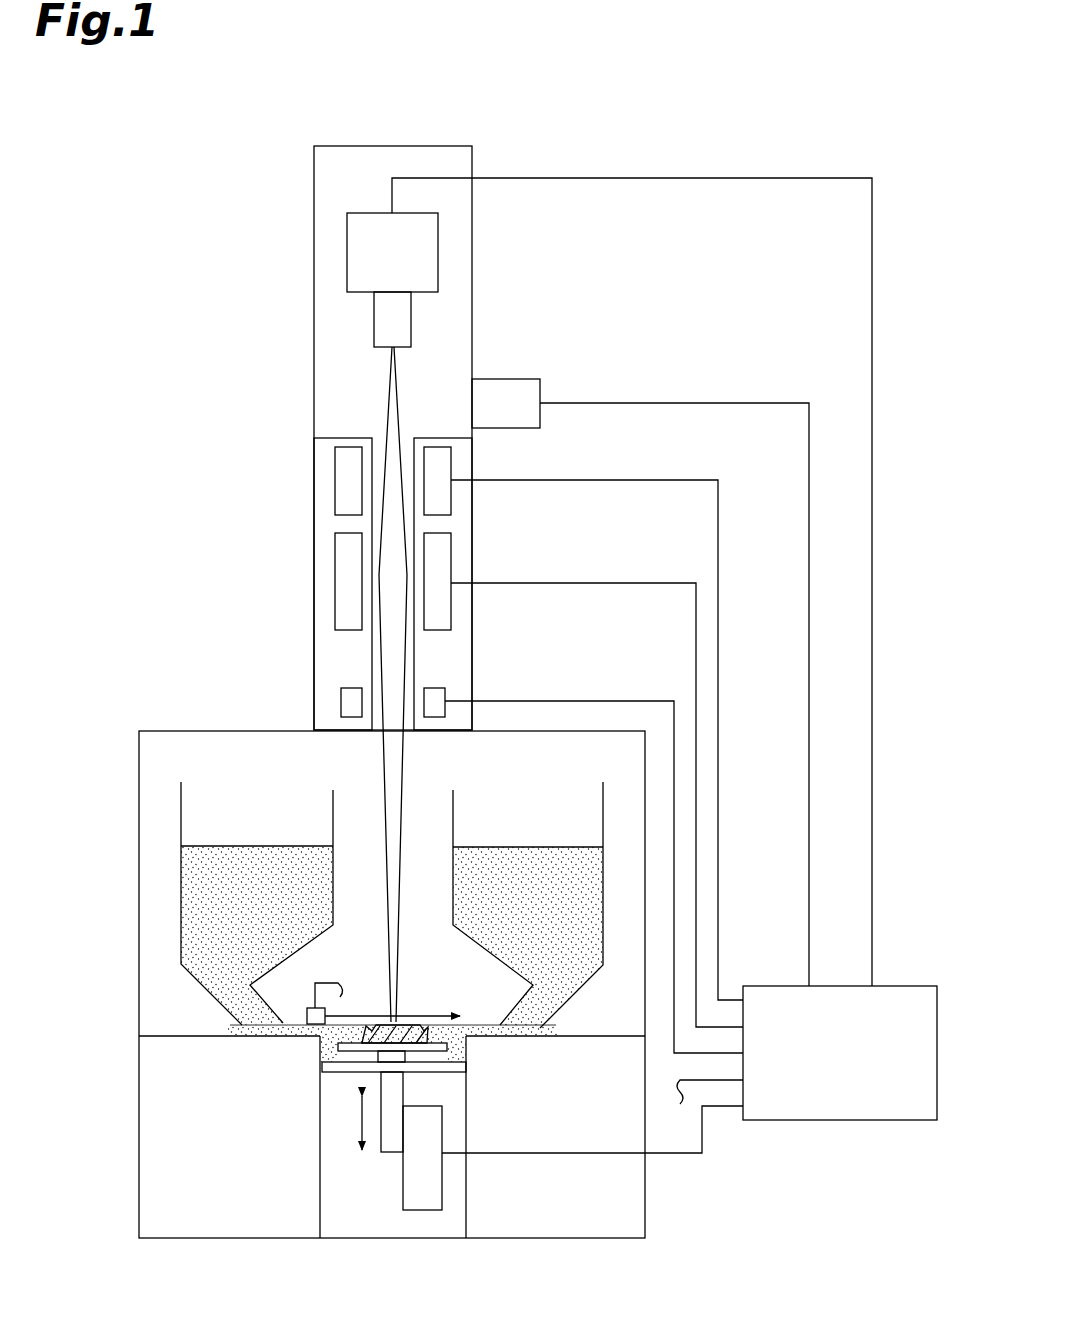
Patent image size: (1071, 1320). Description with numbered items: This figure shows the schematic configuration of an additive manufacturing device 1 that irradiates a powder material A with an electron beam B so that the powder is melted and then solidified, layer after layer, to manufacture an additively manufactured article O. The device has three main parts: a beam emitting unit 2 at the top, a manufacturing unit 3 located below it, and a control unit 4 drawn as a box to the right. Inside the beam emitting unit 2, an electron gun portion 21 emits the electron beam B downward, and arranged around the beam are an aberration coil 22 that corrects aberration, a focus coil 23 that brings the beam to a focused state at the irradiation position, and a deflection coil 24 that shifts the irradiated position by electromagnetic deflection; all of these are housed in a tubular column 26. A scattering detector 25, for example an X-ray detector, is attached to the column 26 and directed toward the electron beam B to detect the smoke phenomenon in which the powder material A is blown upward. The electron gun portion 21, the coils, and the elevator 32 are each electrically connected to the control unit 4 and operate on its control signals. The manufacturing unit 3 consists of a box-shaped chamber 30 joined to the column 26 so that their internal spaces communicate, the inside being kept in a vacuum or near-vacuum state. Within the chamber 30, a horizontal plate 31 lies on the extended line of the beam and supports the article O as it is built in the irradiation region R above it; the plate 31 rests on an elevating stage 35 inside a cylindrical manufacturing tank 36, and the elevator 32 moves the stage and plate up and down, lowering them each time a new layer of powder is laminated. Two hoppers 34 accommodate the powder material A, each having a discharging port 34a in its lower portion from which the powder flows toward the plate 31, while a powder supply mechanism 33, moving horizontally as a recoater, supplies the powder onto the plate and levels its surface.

The additive manufacturing device 1 is at (700, 100).
The beam emitting unit 2 is at (314, 165).
The electron gun portion 21 is at (347, 240).
The aberration coil 22 is at (451, 462).
The focus coil 23 is at (451, 547).
The deflection coil 24 is at (445, 695).
The scattering detector 25 is at (512, 379).
The column 26 is at (314, 201).
The manufacturing unit 3 is at (377, 984).
The chamber 30 is at (139, 888).
The plate 31 is at (338, 1046).
The elevator 32 is at (442, 1176).
The powder supply mechanism 33 is at (307, 1010).
The hopper 34 is at (178, 808).
The discharging port 34a is at (300, 1036).
The elevating stage 35 is at (330, 1072).
The manufacturing tank 36 is at (467, 1100).
The control unit 4 is at (900, 986).
The electron beam B is at (383, 775).
The article O is at (370, 1035).
The irradiation region R is at (418, 1035).
The powder material A is at (457, 1040).